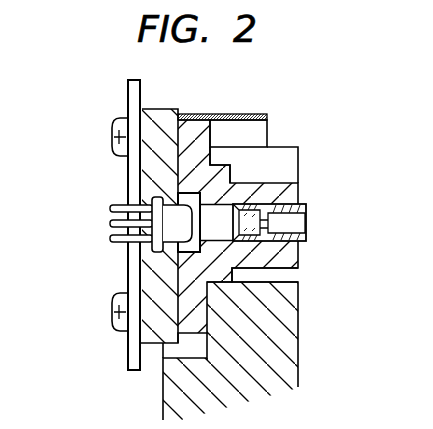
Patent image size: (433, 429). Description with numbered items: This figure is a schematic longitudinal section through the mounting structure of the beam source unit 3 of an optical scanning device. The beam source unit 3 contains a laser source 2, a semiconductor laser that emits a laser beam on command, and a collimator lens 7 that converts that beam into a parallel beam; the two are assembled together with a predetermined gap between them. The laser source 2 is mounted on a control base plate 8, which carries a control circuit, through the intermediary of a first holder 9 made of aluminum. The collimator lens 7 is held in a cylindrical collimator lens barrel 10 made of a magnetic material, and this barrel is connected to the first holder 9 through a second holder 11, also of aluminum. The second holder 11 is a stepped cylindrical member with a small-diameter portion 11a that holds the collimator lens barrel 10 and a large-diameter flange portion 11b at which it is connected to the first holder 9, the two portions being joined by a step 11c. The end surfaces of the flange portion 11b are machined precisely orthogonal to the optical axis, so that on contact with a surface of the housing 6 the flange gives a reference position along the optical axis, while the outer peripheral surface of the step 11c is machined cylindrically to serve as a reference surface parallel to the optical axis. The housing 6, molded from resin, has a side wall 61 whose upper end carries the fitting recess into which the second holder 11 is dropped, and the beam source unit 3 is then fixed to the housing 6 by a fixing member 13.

The laser source 2 is at (173, 233).
The beam source unit 3 is at (104, 112).
The housing 6 is at (302, 331).
The side wall 61 is at (285, 359).
The collimator lens 7 is at (294, 196).
The control base plate 8 is at (127, 362).
The first holder 9 is at (161, 115).
The collimator lens barrel 10 is at (306, 207).
The second holder 11 is at (272, 178).
The small-diameter portion 11a is at (300, 272).
The large-diameter flange portion 11b is at (197, 132).
The step 11c is at (228, 168).
The fixing member 13 is at (233, 114).